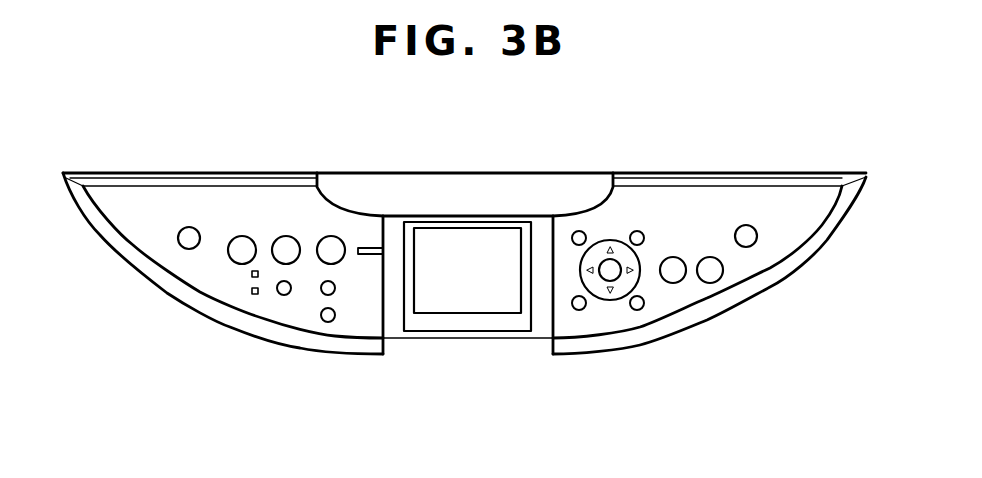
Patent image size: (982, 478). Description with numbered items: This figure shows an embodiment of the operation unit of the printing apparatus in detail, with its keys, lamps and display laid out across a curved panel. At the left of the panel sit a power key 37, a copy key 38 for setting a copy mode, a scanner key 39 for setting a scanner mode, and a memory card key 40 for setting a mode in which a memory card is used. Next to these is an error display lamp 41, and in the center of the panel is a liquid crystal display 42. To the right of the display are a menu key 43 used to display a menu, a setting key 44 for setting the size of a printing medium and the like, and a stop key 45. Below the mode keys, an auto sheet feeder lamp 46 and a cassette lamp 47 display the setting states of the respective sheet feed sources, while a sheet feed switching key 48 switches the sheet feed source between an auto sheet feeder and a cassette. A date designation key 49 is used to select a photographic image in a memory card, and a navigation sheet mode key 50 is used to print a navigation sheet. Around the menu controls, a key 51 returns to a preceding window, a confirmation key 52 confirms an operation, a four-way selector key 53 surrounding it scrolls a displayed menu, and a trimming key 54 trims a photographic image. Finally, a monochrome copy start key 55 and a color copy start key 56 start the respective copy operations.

The power key 37 is at (190, 237).
The copy key 38 is at (244, 247).
The scanner key 39 is at (284, 247).
The memory card key 40 is at (328, 247).
The error display lamp 41 is at (366, 247).
The liquid crystal display 42 is at (467, 252).
The menu key 43 is at (579, 237).
The setting key 44 is at (637, 237).
The stop key 45 is at (746, 236).
The auto sheet feeder lamp 46 is at (252, 275).
The cassette lamp 47 is at (255, 294).
The sheet feed switching key 48 is at (284, 295).
The date designation key 49 is at (328, 322).
The navigation sheet mode key 50 is at (336, 288).
The key 51 is at (579, 305).
The confirmation key 52 is at (607, 271).
The four-way selector key 53 is at (617, 292).
The trimming key 54 is at (637, 305).
The monochrome copy start key 55 is at (672, 272).
The color copy start key 56 is at (714, 270).